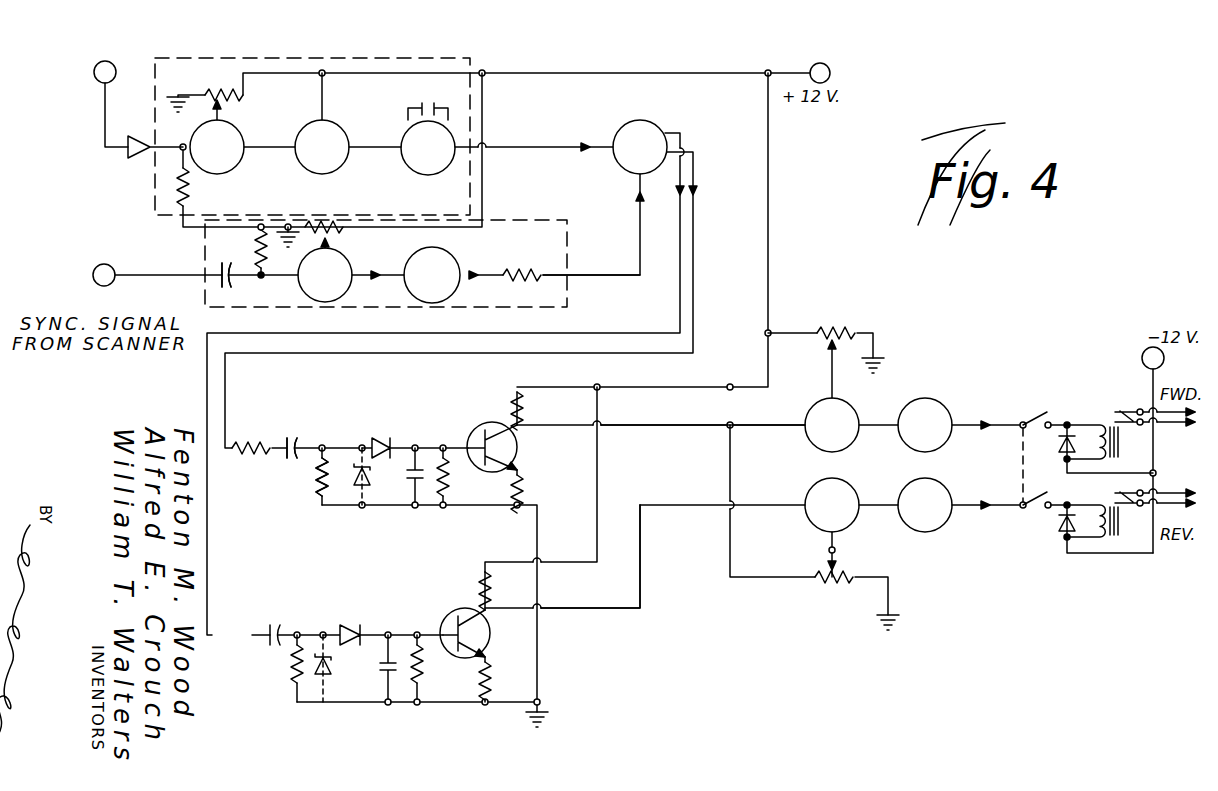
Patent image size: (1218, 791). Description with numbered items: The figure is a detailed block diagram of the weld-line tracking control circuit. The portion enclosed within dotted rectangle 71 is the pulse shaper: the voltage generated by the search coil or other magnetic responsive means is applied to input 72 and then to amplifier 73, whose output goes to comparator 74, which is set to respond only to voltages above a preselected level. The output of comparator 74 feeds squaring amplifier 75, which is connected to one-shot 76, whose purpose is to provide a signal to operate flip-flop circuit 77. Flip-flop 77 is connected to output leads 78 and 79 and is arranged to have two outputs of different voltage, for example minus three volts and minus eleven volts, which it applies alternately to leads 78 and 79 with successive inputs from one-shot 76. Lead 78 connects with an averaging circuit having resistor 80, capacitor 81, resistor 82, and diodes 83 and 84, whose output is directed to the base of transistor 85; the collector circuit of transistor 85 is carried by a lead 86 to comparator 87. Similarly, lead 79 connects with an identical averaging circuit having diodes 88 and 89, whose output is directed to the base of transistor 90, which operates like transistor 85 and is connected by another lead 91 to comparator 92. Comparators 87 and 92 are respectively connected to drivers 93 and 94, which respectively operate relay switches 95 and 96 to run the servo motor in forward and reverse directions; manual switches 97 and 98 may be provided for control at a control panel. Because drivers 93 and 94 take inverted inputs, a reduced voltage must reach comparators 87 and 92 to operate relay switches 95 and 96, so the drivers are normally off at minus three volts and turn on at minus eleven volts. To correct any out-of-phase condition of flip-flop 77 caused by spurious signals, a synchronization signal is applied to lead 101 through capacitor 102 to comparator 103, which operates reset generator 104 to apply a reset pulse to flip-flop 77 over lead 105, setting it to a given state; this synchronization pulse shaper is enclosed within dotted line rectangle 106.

The dotted rectangle 71 is at (352, 60).
The input 72 is at (93, 72).
The amplifier 73 is at (128, 160).
The comparator 74 is at (236, 125).
The squaring amplifier 75 is at (340, 124).
The one-shot 76 is at (405, 168).
The flip-flop circuit 77 is at (620, 122).
The output lead 78 is at (693, 228).
The output lead 79 is at (679, 298).
The resistor 80 is at (256, 445).
The capacitor 81 is at (299, 434).
The resistor 82 is at (318, 478).
The diode 83 is at (370, 478).
The diode 84 is at (381, 436).
The transistor 85 is at (480, 427).
The output line 86 is at (637, 428).
The comparator 87 is at (806, 403).
The diode 88 is at (333, 668).
The diode 89 is at (354, 623).
The transistor 90 is at (461, 612).
The lead 91 is at (663, 508).
The comparator 92 is at (806, 481).
The driver 93 is at (930, 398).
The driver 94 is at (935, 478).
The relay switch 95 is at (1093, 422).
The relay switch 96 is at (1094, 540).
The manual switch 97 is at (1036, 405).
The manual switch 98 is at (1027, 516).
The lead 101 is at (152, 272).
The capacitor 102 is at (228, 260).
The comparator 103 is at (343, 255).
The reset generator 104 is at (445, 250).
The lead 105 is at (600, 273).
The dotted line rectangle 106 is at (550, 307).